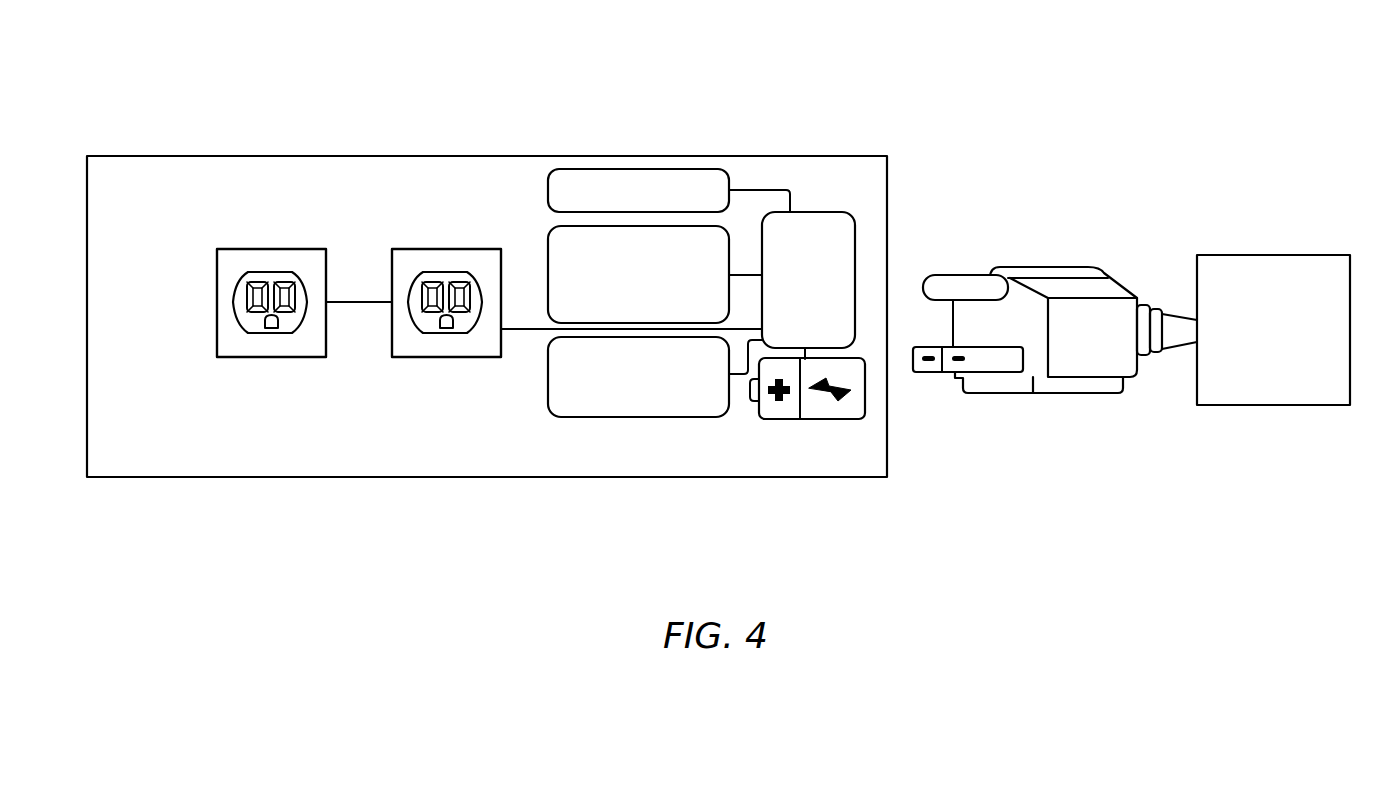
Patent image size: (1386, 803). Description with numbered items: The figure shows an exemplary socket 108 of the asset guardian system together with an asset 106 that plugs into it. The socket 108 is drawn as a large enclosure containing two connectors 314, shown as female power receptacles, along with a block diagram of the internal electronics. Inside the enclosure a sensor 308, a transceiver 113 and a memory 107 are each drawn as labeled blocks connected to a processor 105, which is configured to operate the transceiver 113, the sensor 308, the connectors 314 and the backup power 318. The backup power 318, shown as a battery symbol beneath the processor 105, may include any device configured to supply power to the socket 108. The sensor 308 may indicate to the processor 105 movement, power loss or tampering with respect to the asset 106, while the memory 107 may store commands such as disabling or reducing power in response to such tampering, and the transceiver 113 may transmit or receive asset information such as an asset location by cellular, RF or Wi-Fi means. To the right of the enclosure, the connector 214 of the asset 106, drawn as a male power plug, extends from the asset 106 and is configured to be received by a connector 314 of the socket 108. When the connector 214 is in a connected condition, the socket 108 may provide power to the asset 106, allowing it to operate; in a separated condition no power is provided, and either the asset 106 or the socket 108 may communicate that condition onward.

The socket 108 is at (400, 139).
The connector 314 is at (283, 357).
The sensor 308 is at (669, 190).
The transceiver 113 is at (655, 274).
The processor 105 is at (808, 285).
The memory 107 is at (655, 377).
The backup power 318 is at (818, 420).
The connector 214 is at (1108, 393).
The asset 106 is at (1200, 218).